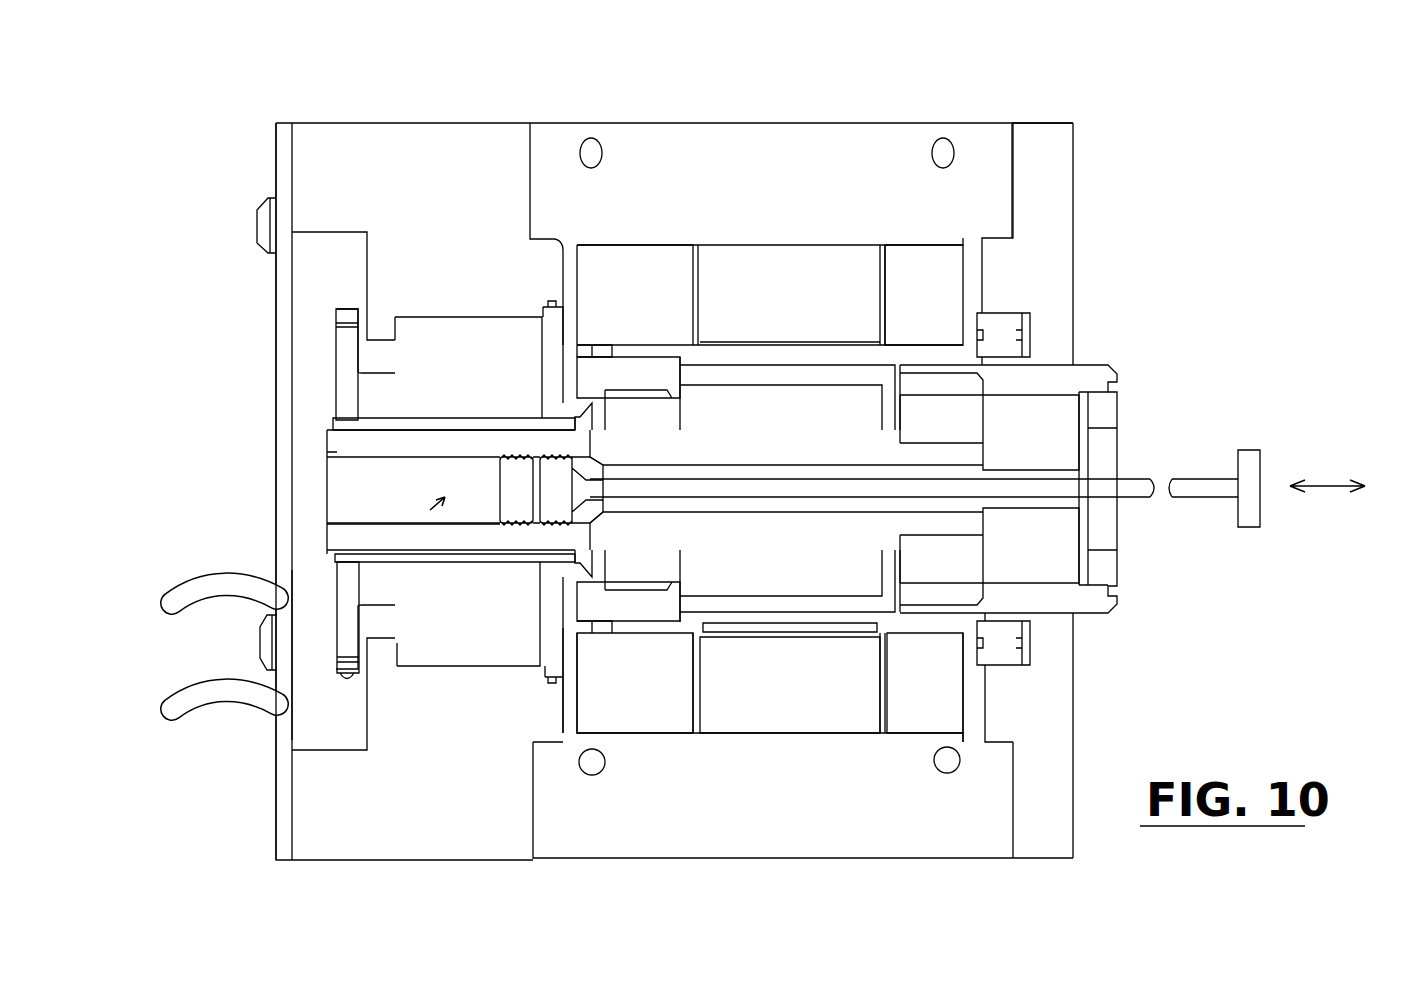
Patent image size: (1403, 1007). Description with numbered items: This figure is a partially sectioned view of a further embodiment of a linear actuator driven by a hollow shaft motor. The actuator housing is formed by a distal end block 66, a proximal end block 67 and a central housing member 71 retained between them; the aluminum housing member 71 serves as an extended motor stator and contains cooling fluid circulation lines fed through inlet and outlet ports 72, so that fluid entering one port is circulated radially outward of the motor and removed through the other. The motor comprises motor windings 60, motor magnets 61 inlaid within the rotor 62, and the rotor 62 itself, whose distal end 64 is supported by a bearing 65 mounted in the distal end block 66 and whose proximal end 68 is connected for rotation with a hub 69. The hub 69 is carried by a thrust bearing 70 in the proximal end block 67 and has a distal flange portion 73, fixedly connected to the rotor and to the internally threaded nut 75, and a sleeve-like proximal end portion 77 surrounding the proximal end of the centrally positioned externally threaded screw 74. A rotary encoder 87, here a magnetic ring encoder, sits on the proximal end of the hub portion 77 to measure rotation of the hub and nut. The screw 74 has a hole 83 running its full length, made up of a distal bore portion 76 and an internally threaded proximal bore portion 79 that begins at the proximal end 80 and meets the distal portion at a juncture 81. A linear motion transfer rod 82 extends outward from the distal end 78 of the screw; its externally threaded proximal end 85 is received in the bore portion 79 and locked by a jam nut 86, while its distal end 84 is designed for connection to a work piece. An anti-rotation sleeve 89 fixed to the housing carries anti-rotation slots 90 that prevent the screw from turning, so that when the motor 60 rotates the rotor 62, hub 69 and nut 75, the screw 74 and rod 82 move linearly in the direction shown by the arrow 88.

The motor windings 60 is at (738, 272).
The motor magnets 61 is at (858, 352).
The rotor 62 is at (918, 358).
The distal end 64 is at (1058, 362).
The bearing 65 is at (998, 335).
The distal end block 66 is at (1043, 173).
The proximal end block 67 is at (357, 150).
The proximal end 68 is at (620, 350).
The hub 69 is at (597, 608).
The thrust bearing 70 is at (455, 335).
The central housing member 71 is at (782, 160).
The cooling fluid inlet and outlet ports 72 is at (591, 150).
The distal flange portion 73 is at (632, 388).
The screw 74 is at (838, 536).
The nut 75 is at (762, 410).
The distal bore portion 76 is at (755, 500).
The proximal end portion 77 is at (423, 457).
The distal end 78 is at (1093, 392).
The proximal bore portion 79 is at (426, 460).
The proximal end 80 is at (338, 453).
The juncture 81 is at (588, 512).
The linear motion transfer rod 82 is at (888, 490).
The hole 83 is at (437, 500).
The distal end 84 is at (1253, 468).
The proximal end 85 is at (552, 493).
The jam nut 86 is at (508, 498).
The rotary encoder 87 is at (353, 588).
The arrow 88 is at (1327, 487).
The anti-rotation sleeve 89 is at (1047, 558).
The anti-rotation slots 90 is at (1065, 467).